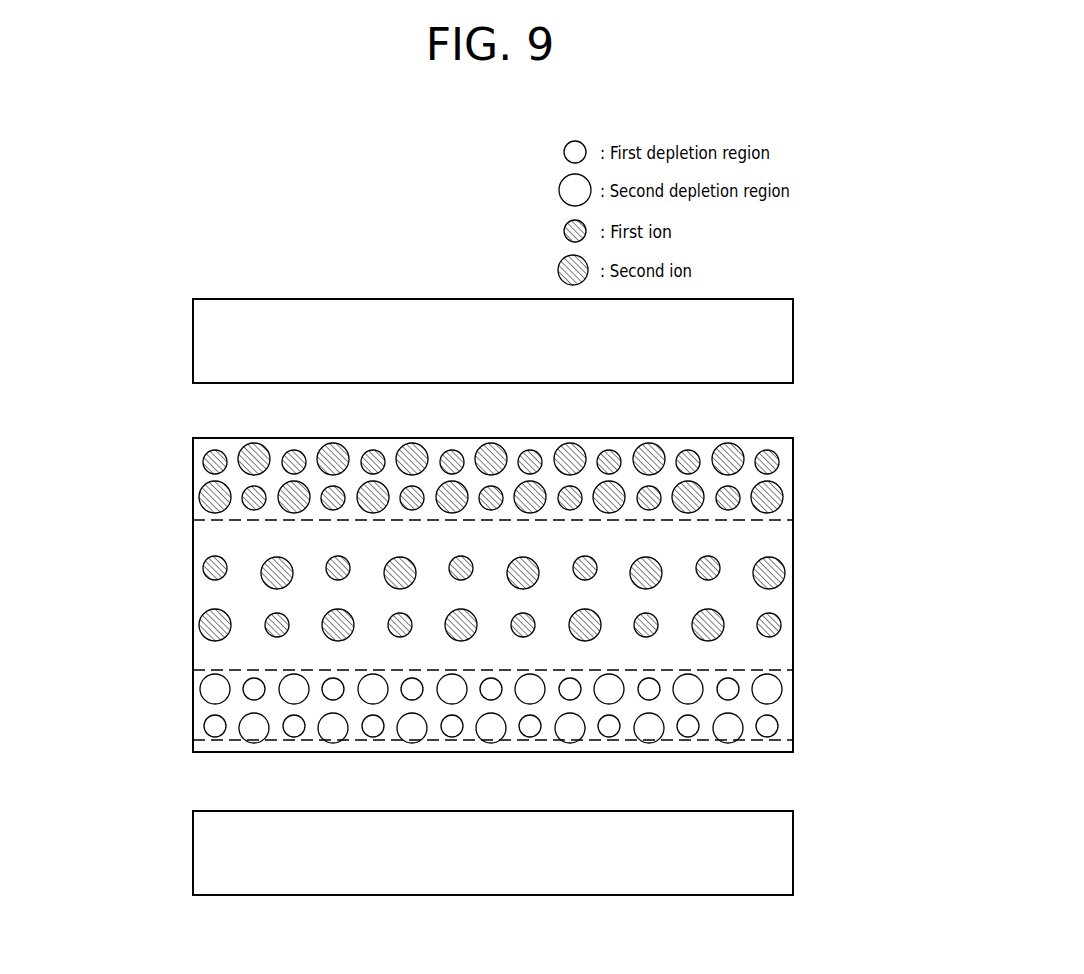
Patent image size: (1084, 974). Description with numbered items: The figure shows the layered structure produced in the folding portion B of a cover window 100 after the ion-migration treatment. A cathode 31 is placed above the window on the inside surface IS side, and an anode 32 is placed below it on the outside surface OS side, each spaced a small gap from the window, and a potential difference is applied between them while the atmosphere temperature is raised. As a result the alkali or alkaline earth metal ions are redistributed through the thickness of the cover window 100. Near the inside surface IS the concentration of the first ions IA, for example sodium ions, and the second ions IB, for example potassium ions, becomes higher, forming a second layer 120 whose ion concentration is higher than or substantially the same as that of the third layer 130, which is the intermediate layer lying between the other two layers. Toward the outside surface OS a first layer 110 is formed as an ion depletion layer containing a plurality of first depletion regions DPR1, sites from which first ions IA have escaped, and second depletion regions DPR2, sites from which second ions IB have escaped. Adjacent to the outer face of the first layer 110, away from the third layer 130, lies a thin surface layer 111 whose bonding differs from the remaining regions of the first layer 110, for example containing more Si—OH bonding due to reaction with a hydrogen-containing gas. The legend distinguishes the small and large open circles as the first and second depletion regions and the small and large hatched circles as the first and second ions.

The cathode 31 is at (328, 298).
The anode 32 is at (642, 896).
The cover window 100 is at (645, 752).
The first layer 110 is at (495, 707).
The surface layer 111 is at (193, 749).
The second layer 120 is at (465, 459).
The third layer 130 is at (189, 522).
The inside surface IS is at (300, 437).
The first ion IA is at (373, 455).
The second ion IB is at (333, 443).
The first depletion region DPR1 is at (775, 726).
The second depletion region DPR2 is at (773, 686).
The folding portion B is at (793, 756).
The outside surface OS is at (487, 753).